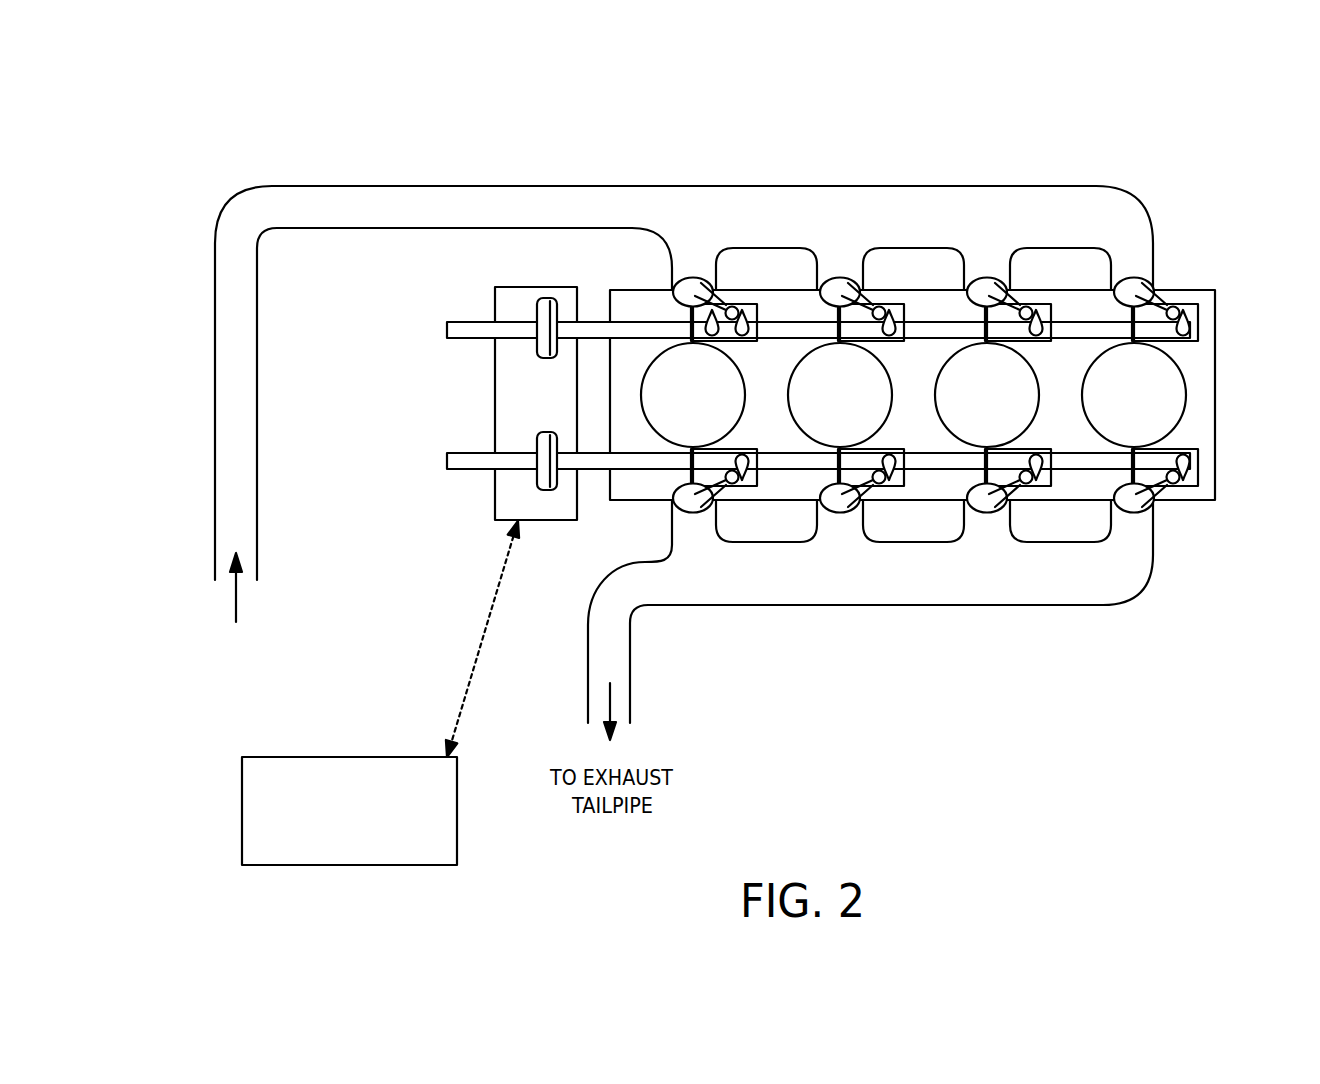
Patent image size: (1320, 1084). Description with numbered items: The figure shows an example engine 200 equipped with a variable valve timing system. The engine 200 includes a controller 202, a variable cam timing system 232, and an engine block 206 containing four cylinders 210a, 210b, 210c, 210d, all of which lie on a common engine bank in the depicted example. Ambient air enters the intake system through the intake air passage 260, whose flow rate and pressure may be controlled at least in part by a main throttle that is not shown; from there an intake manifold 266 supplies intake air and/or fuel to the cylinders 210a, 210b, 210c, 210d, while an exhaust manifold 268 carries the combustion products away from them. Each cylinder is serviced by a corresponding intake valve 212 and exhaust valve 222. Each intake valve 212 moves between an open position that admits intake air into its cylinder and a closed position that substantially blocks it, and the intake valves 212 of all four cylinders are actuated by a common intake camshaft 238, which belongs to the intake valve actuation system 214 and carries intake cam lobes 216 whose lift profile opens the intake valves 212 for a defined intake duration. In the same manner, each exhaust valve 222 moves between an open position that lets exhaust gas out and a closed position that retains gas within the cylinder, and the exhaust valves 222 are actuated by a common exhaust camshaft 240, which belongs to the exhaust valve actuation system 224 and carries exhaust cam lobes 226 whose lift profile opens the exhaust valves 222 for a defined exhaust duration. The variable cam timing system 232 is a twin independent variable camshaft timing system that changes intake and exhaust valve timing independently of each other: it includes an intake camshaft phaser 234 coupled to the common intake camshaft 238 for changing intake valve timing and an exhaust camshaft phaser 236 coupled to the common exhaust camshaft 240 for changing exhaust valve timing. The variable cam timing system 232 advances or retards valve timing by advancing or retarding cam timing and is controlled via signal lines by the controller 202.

The engine 200 is at (257, 86).
The controller 202 is at (433, 822).
The engine block 206 is at (1226, 294).
The cylinder 210a is at (713, 405).
The cylinder 210b is at (860, 405).
The cylinder 210c is at (1007, 405).
The cylinder 210d is at (1154, 405).
The intake valve 212 is at (832, 278).
The intake valve actuation system 214 is at (905, 344).
The intake cam lobe 216 is at (893, 303).
The exhaust valve 222 is at (830, 522).
The exhaust valve actuation system 224 is at (924, 431).
The exhaust cam lobe 226 is at (893, 484).
The variable cam timing system 232 is at (492, 510).
The intake camshaft phaser 234 is at (548, 298).
The exhaust camshaft phaser 236 is at (545, 492).
The intake camshaft 238 is at (622, 318).
The exhaust camshaft 240 is at (645, 474).
The intake air passage 260 is at (258, 318).
The intake manifold 266 is at (1023, 230).
The exhaust manifold 268 is at (1036, 585).